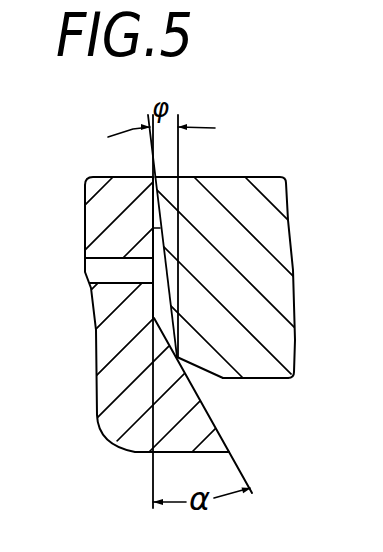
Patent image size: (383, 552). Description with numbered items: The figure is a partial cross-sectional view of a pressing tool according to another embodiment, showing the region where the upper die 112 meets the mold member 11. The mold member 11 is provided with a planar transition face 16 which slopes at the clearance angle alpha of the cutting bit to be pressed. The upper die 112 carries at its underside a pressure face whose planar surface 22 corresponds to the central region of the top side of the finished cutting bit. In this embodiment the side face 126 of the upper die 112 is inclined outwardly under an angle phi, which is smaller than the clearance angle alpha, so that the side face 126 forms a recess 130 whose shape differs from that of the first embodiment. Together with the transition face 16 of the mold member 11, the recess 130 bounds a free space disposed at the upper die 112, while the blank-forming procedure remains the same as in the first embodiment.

The mold member 11 is at (112, 390).
The transition face 16 is at (206, 401).
The planar surface 22 is at (283, 378).
The upper die 112 is at (252, 197).
The side face 126 is at (161, 265).
The recess 130 is at (160, 296).